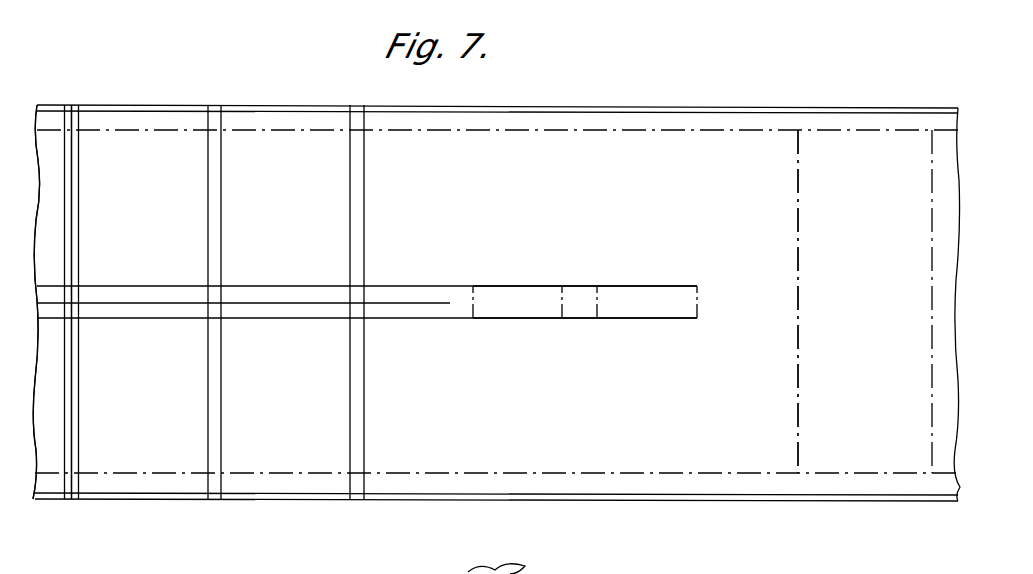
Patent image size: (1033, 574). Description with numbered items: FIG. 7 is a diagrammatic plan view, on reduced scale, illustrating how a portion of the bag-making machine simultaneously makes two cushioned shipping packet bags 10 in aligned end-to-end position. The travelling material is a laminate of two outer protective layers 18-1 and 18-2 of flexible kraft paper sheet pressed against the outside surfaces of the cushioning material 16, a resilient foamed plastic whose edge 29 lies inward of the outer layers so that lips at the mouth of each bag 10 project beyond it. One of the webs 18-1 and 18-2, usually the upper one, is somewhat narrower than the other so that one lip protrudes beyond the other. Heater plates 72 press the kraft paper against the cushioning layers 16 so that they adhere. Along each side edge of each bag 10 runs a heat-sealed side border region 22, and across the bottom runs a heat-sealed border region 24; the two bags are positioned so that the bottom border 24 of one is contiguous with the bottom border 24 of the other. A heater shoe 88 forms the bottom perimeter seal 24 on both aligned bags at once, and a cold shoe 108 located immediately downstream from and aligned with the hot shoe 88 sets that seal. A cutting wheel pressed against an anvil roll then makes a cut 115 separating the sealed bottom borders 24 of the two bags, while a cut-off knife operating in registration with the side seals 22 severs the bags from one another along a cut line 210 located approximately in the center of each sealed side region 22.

The cushioned shipping packet bag 10 is at (175, 210).
The cushioning layer 16 is at (668, 455).
The upper outer protective layer 18-1 is at (718, 107).
The lower outer protective layer 18-2 is at (630, 108).
The heat-sealed side border region 22 is at (78, 249).
The heat-sealed bottom border region 24 is at (288, 308).
The edge of the cushioning material 29 is at (567, 128).
The heater plate 72 is at (792, 183).
The heater shoe 88 is at (661, 318).
The cold shoe 108 is at (516, 318).
The cut 115 is at (414, 302).
The cut line 210 is at (73, 181).